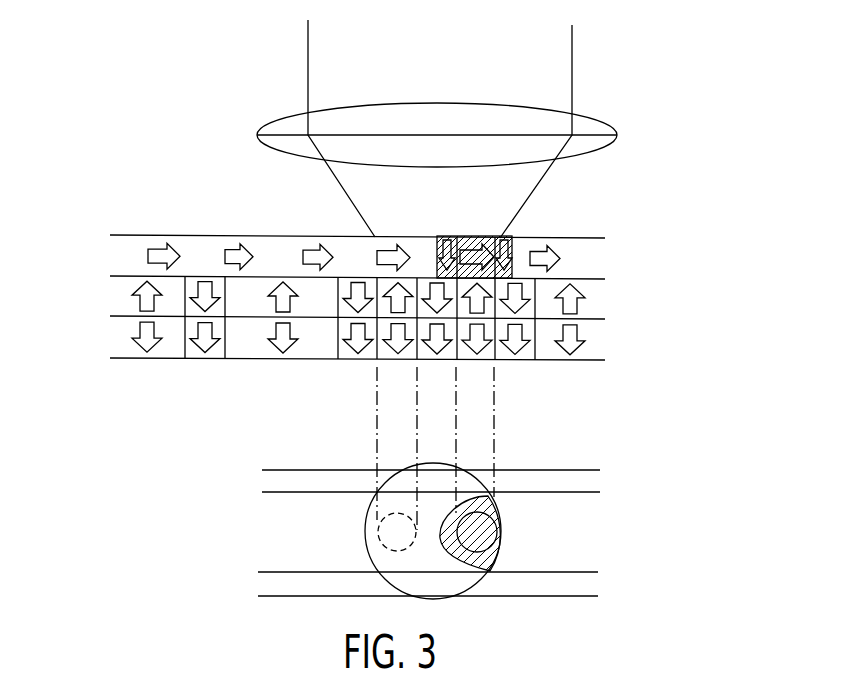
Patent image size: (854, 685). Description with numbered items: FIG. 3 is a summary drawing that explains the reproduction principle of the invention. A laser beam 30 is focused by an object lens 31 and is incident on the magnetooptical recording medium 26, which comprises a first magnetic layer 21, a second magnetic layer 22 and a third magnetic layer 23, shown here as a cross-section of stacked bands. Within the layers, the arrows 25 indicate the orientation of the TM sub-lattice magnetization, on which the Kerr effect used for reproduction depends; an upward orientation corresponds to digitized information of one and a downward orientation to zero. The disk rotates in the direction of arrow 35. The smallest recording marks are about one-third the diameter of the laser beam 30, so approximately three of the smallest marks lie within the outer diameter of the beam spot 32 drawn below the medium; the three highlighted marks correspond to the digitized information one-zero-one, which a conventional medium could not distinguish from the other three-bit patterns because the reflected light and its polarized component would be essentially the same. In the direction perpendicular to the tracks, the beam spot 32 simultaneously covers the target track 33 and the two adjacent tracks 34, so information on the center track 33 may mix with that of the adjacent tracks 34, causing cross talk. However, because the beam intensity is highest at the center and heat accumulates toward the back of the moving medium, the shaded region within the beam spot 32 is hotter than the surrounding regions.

The first magnetic layer 21 is at (108, 256).
The second magnetic layer 22 is at (112, 299).
The third magnetic layer 23 is at (112, 339).
The arrows 25 is at (233, 244).
The magnetooptical recording medium 26 is at (595, 238).
The laser beam 30 is at (438, 62).
The object lens 31 is at (266, 126).
The beam spot 32 is at (472, 476).
The target track 33 is at (262, 532).
The adjacent tracks 34 is at (252, 480).
The arrow 35 is at (698, 277).